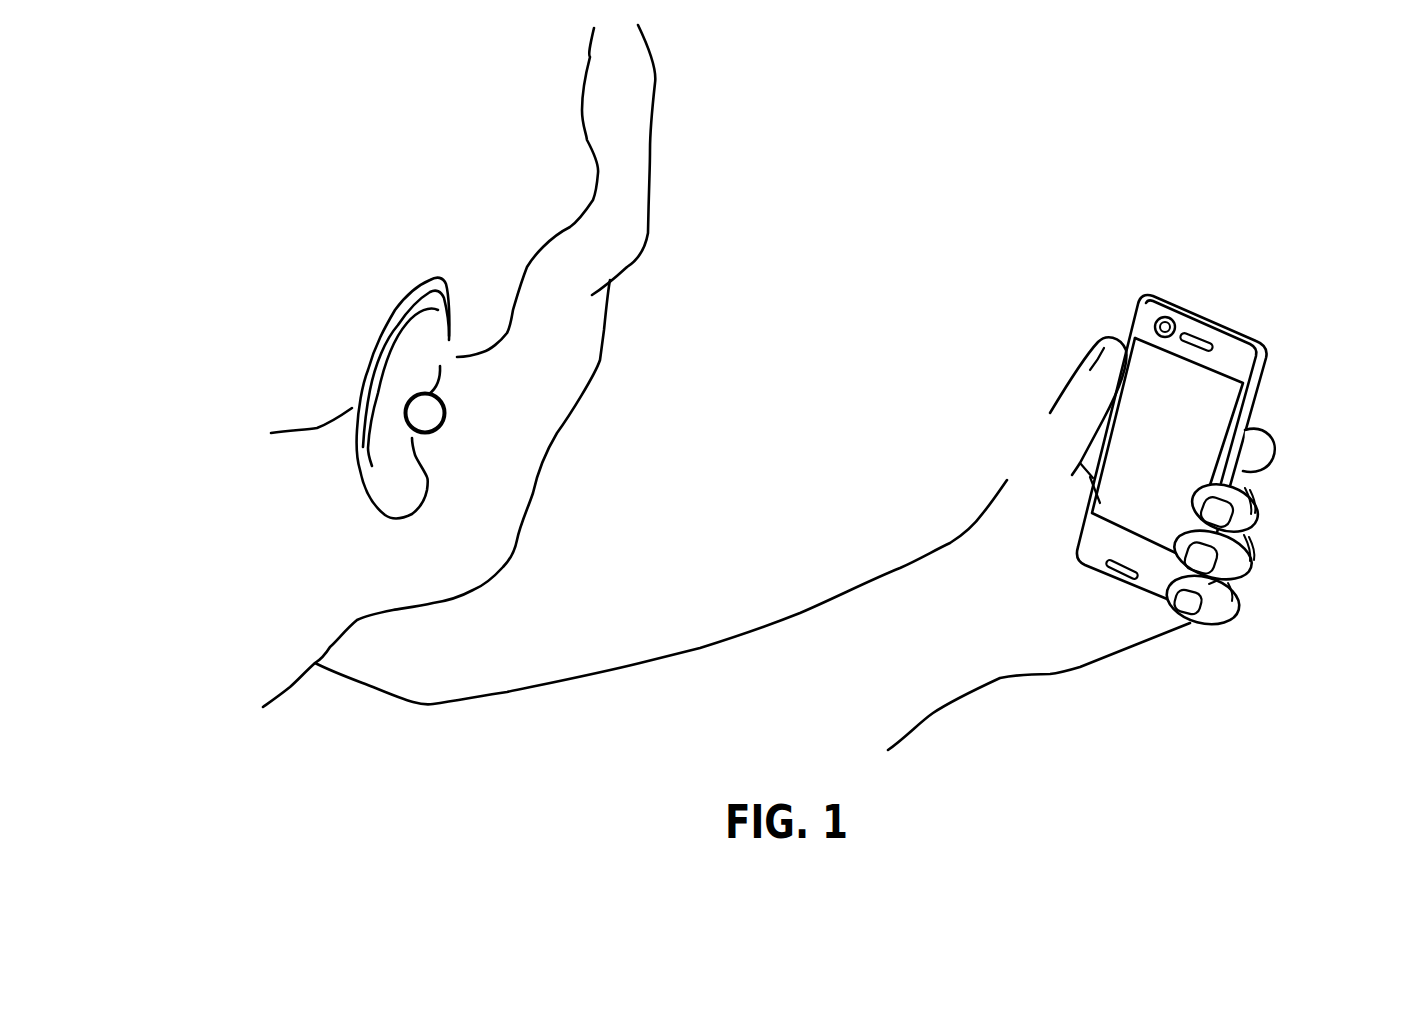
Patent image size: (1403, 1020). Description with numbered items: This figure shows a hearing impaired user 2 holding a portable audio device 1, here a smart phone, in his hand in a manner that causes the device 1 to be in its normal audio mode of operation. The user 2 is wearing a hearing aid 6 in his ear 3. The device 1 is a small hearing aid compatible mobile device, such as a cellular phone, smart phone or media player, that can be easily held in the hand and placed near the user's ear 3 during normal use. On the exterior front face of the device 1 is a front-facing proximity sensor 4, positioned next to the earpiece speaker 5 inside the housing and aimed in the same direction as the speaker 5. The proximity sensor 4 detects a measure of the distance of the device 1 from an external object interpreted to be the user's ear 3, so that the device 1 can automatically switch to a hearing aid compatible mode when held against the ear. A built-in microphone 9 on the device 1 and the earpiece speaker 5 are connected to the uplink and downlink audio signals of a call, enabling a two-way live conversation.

The portable audio device 1 is at (1115, 262).
The user 2 is at (357, 209).
The ear 3 is at (367, 442).
The proximity sensor 4 is at (1165, 316).
The earpiece speaker 5 is at (1204, 336).
The hearing aid 6 is at (433, 411).
The microphone 9 is at (1120, 577).